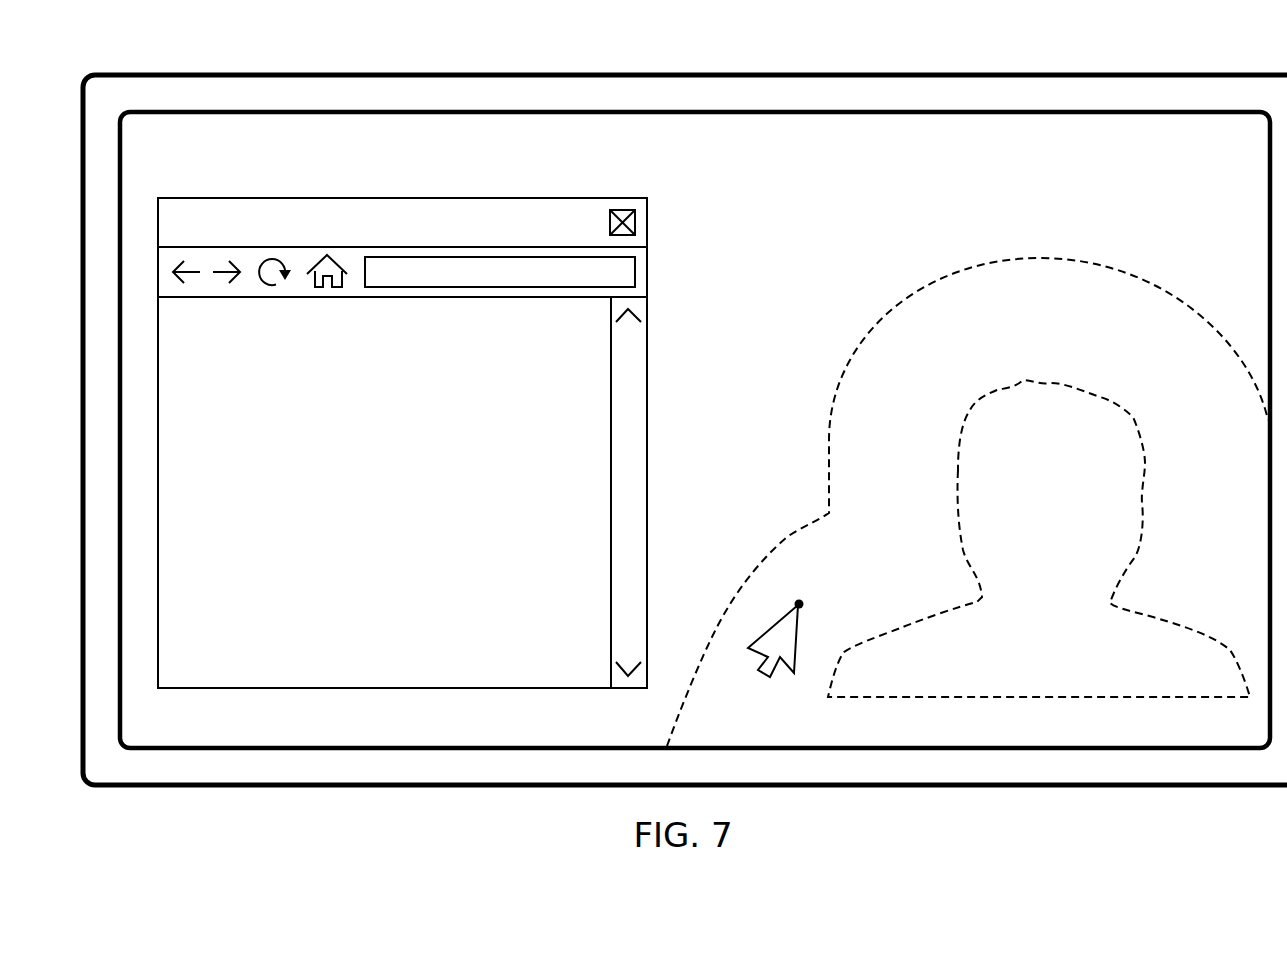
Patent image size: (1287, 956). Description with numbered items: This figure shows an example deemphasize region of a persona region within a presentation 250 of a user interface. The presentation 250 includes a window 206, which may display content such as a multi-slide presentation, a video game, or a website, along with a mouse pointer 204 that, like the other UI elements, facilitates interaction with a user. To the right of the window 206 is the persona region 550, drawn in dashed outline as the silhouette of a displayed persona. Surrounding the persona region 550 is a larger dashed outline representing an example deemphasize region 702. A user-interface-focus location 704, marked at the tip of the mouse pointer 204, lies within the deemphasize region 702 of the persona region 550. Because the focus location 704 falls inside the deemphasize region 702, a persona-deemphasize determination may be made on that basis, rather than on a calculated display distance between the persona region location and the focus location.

The presentation of a user interface 250 is at (130, 74).
The window 206 is at (301, 197).
The deemphasize region 702 is at (1062, 258).
The persona region 550 is at (1135, 553).
The mouse pointer 204 is at (766, 673).
The user-interface-focus location 704 is at (801, 604).